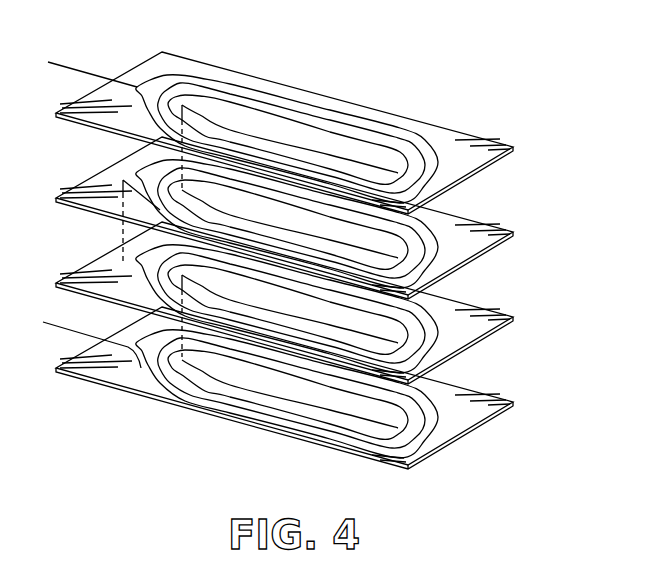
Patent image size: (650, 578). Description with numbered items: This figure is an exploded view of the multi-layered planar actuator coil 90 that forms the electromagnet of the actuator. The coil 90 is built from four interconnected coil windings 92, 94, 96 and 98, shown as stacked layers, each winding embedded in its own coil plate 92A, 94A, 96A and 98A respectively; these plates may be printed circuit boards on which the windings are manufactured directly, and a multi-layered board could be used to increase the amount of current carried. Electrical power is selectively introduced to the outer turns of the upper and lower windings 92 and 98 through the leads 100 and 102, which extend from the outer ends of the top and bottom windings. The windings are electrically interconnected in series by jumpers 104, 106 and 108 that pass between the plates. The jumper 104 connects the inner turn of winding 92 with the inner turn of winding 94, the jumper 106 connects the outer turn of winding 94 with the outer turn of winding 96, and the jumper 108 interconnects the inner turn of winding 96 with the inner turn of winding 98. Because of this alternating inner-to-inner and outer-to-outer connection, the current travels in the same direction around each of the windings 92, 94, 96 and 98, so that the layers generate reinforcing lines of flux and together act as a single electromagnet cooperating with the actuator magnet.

The coil 90 is at (310, 244).
The coil winding 92 is at (402, 133).
The coil plate 92A is at (493, 137).
The coil winding 94 is at (423, 227).
The coil plate 94A is at (502, 227).
The coil winding 96 is at (420, 315).
The coil plate 96A is at (500, 313).
The coil winding 98 is at (422, 400).
The coil plate 98A is at (500, 400).
The lead 100 is at (71, 64).
The lead 102 is at (62, 328).
The jumper 104 is at (178, 157).
The jumper 106 is at (121, 236).
The jumper 108 is at (180, 317).